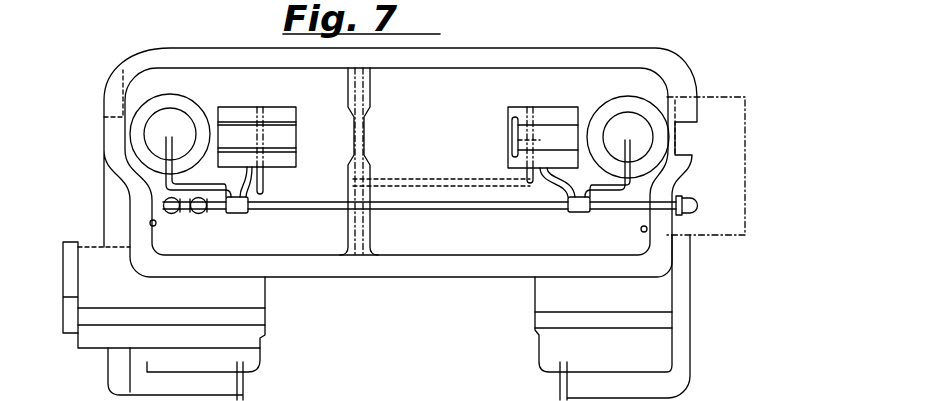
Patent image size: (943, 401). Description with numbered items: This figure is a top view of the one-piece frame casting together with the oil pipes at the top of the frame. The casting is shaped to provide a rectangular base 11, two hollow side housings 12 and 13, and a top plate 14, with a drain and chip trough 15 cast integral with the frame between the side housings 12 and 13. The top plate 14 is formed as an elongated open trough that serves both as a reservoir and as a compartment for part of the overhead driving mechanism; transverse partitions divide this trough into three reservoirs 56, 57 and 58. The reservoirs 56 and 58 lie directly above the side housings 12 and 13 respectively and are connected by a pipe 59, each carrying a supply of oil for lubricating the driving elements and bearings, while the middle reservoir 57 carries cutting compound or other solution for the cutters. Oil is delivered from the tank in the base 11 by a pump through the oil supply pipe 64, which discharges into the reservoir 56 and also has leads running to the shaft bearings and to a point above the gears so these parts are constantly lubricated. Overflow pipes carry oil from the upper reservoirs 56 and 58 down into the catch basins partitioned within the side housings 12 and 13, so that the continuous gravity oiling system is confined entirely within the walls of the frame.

The rectangular base 11 is at (684, 346).
The side housing 12 is at (265, 290).
The side housing 13 is at (672, 278).
The top plate 14 is at (395, 277).
The drain and chip trough 15 is at (397, 352).
The reservoir 56 is at (210, 82).
The reservoir 57 is at (435, 78).
The reservoir 58 is at (600, 75).
The pipe 59 is at (405, 178).
The oil supply pipe 64 is at (307, 206).